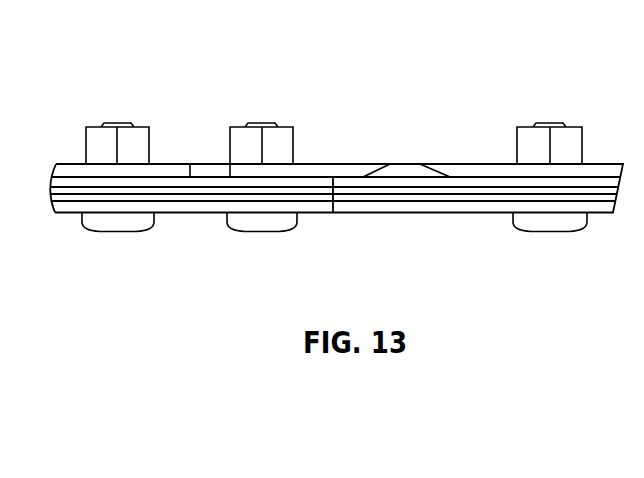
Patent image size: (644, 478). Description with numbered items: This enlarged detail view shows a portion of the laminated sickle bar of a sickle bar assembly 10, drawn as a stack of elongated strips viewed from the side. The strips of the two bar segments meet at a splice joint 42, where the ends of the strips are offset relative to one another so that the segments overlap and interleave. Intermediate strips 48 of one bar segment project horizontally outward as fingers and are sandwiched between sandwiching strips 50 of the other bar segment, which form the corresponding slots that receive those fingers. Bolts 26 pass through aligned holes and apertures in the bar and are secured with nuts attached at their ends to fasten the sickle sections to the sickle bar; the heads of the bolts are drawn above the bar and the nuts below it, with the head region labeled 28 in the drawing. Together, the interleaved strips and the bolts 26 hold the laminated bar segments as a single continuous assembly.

The sickle bar assembly 10 is at (191, 97).
The splice joint 42 is at (206, 195).
The intermediate strips 48 is at (173, 188).
The sandwiching strips 50 is at (343, 181).
The bolt head 28 is at (529, 138).
The bolts 26 is at (546, 225).